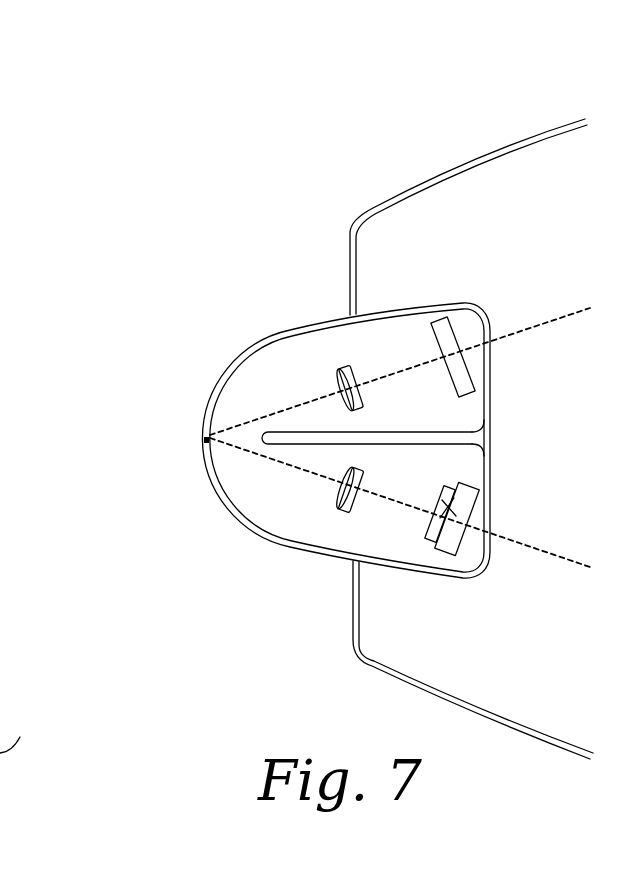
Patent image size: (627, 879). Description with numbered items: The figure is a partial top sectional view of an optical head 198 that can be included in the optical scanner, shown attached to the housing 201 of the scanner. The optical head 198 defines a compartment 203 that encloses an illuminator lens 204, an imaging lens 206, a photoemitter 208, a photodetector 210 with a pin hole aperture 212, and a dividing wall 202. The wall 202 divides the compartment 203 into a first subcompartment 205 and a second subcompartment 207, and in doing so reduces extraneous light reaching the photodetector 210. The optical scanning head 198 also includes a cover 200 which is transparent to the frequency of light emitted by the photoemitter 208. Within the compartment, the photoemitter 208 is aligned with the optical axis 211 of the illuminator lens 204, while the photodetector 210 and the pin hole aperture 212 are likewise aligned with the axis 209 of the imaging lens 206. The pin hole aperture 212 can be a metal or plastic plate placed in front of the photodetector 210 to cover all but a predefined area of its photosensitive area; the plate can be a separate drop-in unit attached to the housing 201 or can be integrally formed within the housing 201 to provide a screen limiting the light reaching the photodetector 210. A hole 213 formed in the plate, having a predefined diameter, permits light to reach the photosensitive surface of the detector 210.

The optical head 198 is at (346, 447).
The cover 200 is at (288, 330).
The housing 201 is at (518, 142).
The dividing wall 202 is at (280, 433).
The compartment 203 is at (238, 477).
The illuminator lens 204 is at (362, 385).
The first subcompartment 205 is at (382, 336).
The imaging lens 206 is at (364, 481).
The second subcompartment 207 is at (329, 530).
The photoemitter 208 is at (472, 374).
The axis of the imaging lens 209 is at (528, 547).
The photodetector 210 is at (447, 556).
The optical axis of the illuminator lens 211 is at (557, 318).
The pin hole aperture 212 is at (420, 560).
The hole 213 is at (445, 490).